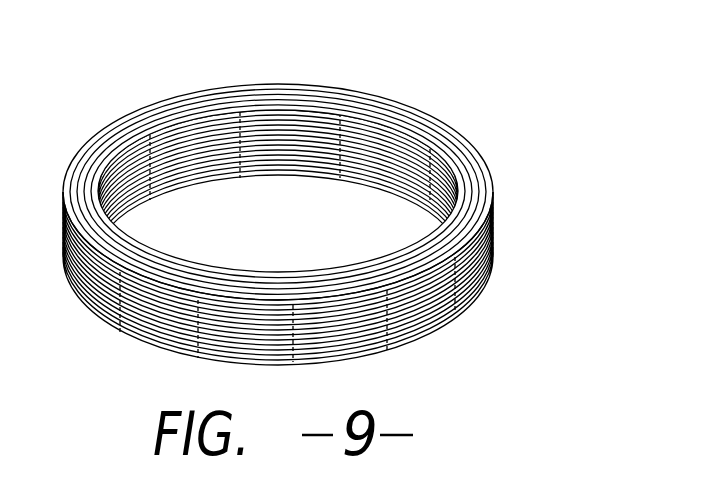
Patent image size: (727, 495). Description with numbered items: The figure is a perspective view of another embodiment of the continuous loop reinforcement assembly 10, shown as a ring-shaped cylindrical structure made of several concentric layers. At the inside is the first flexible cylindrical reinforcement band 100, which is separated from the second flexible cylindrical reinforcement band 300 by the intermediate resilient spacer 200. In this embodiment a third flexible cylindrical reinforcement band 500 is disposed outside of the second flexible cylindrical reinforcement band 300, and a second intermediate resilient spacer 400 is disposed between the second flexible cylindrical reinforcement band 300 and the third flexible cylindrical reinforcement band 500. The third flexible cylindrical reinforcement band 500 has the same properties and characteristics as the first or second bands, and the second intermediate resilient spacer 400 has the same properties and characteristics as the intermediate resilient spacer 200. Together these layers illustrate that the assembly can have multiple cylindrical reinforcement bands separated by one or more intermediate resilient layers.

The continuous loop reinforcement assembly 10 is at (505, 87).
The first flexible cylindrical reinforcement band 100 is at (175, 128).
The intermediate resilient spacer 200 is at (252, 95).
The second flexible cylindrical reinforcement band 300 is at (273, 97).
The second intermediate resilient spacer 400 is at (390, 110).
The third flexible cylindrical reinforcement band 500 is at (492, 175).